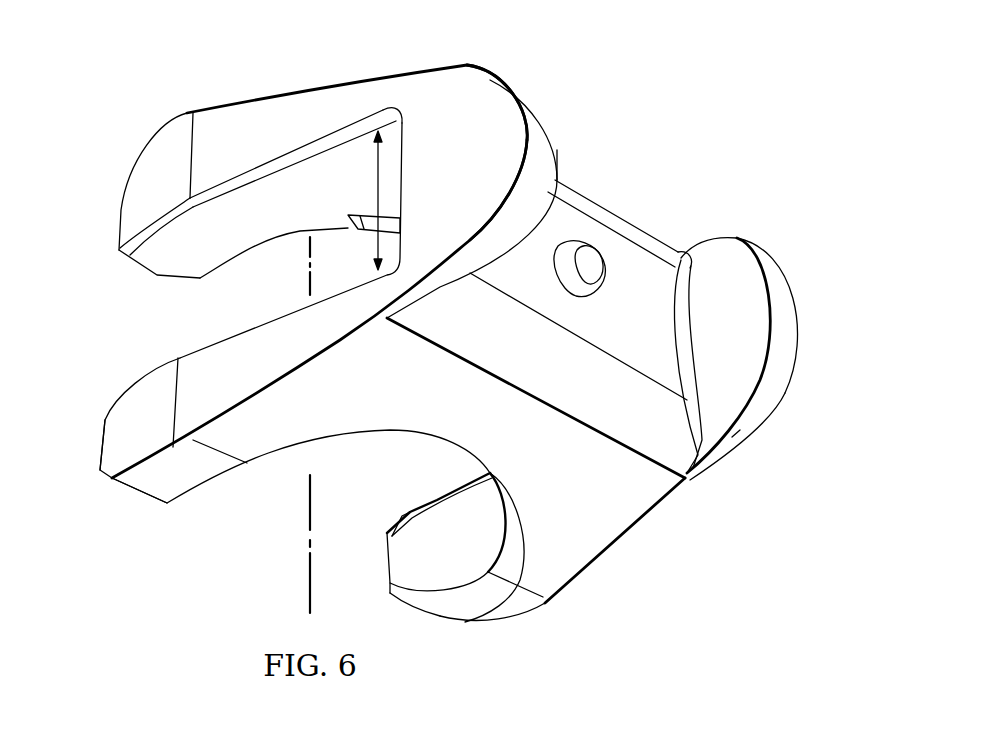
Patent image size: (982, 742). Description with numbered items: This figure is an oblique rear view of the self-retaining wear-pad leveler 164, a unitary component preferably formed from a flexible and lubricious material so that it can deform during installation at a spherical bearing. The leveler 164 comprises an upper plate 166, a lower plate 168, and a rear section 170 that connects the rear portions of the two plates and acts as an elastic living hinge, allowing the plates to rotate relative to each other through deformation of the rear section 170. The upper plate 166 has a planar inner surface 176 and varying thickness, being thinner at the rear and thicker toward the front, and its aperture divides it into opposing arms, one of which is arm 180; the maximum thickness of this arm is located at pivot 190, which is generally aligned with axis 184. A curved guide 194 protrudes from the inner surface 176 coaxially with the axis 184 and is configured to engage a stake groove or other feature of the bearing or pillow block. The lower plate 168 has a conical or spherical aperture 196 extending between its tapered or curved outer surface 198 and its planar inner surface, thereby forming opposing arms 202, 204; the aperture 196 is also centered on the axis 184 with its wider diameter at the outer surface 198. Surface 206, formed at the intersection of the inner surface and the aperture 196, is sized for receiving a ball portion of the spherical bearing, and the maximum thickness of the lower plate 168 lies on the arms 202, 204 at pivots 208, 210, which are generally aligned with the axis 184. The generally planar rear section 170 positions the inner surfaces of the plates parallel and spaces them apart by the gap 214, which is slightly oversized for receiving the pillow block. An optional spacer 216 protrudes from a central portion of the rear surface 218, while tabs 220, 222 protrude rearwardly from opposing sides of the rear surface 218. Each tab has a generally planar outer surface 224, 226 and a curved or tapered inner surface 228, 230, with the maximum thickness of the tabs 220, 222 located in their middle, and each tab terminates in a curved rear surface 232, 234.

The leveler 164 is at (708, 113).
The upper plate 166 is at (245, 125).
The lower plate 168 is at (245, 350).
The rear section 170 is at (633, 273).
The inner surface 176 is at (177, 268).
The arm 180 is at (133, 174).
The axis 184 is at (306, 598).
The pivot 190 is at (173, 121).
The curved guide 194 is at (348, 219).
The aperture 196 is at (403, 565).
The outer surface 198 is at (578, 558).
The arm 202 is at (427, 617).
The arm 204 is at (115, 428).
The surface 206 is at (432, 512).
The pivot 208 is at (483, 617).
The pivot 210 is at (155, 485).
The gap 214 is at (375, 191).
The spacer 216 is at (604, 272).
The rear surface 218 is at (648, 336).
The tab 220 is at (798, 337).
The tab 222 is at (463, 97).
The outer surface 224 is at (783, 380).
The outer surface 226 is at (503, 120).
The inner surface 228 is at (753, 297).
The inner surface 230 is at (553, 143).
The rear surface 232 is at (788, 295).
The rear surface 234 is at (525, 196).